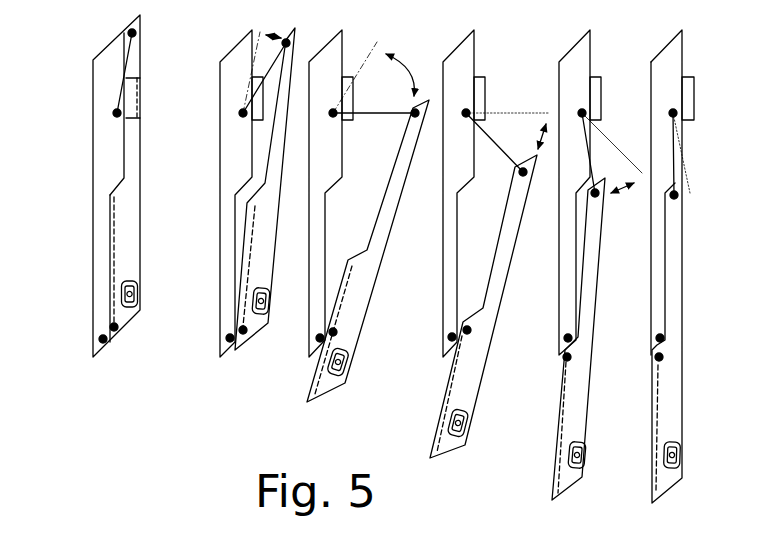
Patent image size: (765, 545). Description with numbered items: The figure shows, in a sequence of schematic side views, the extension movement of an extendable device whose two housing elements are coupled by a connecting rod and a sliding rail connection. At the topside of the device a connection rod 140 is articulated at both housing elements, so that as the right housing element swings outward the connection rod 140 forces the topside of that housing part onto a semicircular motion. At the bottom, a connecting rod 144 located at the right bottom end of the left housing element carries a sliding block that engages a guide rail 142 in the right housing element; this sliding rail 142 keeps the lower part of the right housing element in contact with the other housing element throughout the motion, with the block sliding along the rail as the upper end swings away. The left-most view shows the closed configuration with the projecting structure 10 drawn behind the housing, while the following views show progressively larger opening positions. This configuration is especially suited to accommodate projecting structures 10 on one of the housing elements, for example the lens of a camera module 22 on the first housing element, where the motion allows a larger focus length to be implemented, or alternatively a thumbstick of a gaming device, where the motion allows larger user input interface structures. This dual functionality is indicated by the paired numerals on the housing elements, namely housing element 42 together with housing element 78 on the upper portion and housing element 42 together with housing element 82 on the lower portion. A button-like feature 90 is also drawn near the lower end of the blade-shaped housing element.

The projecting structure 10 is at (140, 78).
The camera module 22 is at (136, 184).
The housing element 42 is at (118, 187).
The housing element 78 is at (111, 114).
The housing element 82 is at (123, 268).
The button 90 is at (132, 312).
The connection rod 140 is at (122, 87).
The guide rail 142 is at (110, 277).
The connecting rod 144 is at (102, 336).